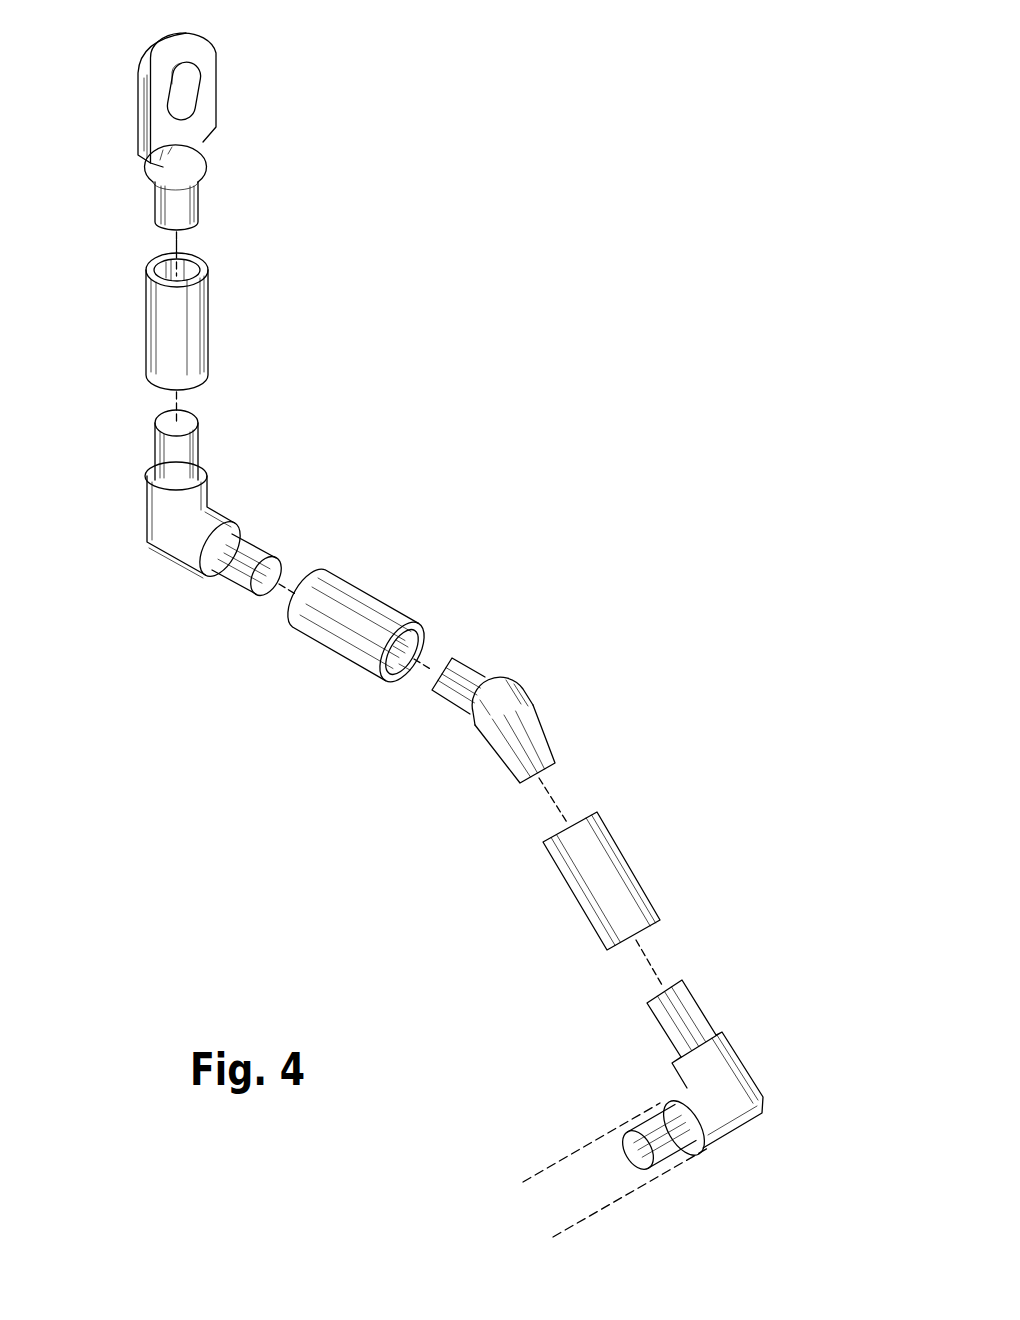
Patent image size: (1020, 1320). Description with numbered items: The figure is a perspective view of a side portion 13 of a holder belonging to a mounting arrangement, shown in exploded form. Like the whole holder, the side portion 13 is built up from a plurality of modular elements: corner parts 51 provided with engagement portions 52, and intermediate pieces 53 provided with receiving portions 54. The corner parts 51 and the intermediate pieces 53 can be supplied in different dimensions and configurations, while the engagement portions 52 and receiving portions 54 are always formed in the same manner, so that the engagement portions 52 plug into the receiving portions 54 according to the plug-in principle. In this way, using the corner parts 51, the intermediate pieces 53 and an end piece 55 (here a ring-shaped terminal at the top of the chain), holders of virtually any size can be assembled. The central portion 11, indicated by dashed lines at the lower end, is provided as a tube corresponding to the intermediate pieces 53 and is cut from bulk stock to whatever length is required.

The central portion 11 is at (568, 1152).
The side portion 13 is at (517, 368).
The corner part 51 is at (158, 518).
The engagement portion 52 is at (192, 443).
The intermediate piece 53 is at (200, 333).
The receiving portion 54 is at (398, 664).
The end piece 55 is at (205, 110).